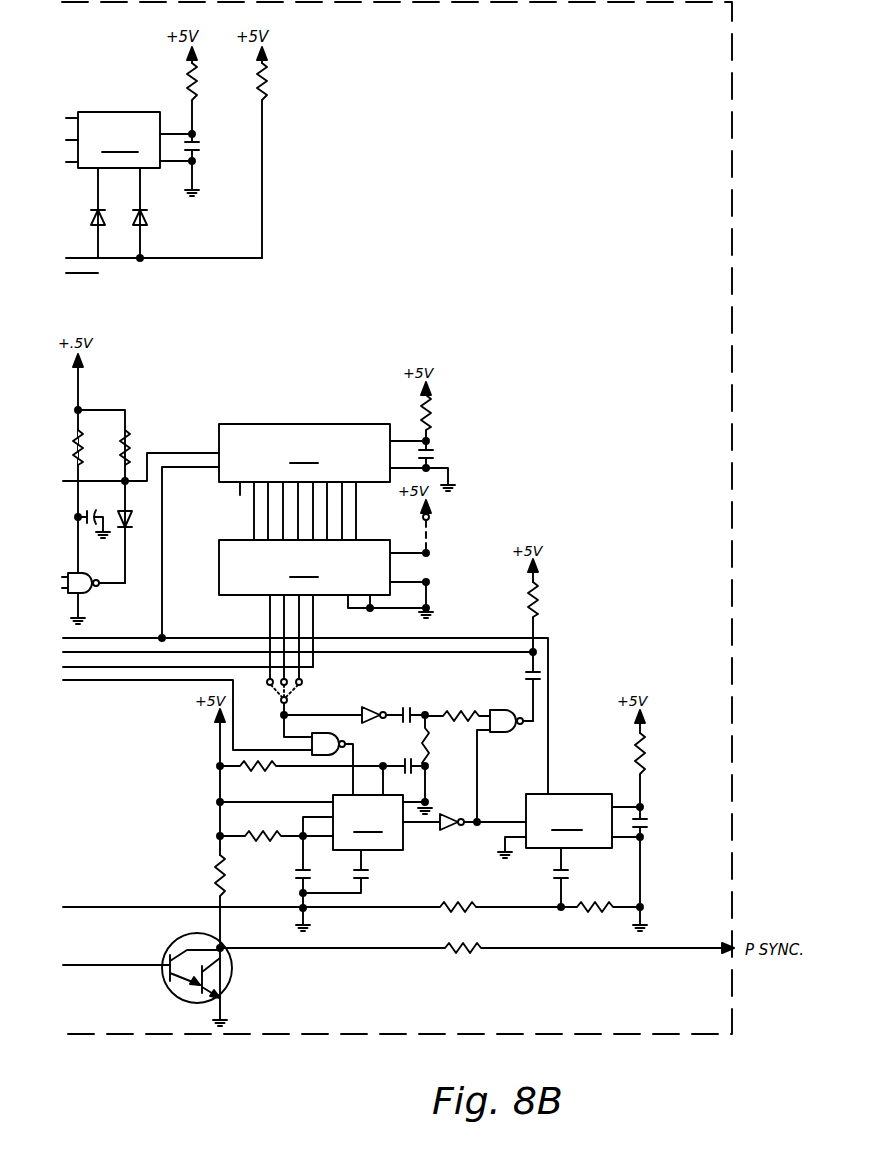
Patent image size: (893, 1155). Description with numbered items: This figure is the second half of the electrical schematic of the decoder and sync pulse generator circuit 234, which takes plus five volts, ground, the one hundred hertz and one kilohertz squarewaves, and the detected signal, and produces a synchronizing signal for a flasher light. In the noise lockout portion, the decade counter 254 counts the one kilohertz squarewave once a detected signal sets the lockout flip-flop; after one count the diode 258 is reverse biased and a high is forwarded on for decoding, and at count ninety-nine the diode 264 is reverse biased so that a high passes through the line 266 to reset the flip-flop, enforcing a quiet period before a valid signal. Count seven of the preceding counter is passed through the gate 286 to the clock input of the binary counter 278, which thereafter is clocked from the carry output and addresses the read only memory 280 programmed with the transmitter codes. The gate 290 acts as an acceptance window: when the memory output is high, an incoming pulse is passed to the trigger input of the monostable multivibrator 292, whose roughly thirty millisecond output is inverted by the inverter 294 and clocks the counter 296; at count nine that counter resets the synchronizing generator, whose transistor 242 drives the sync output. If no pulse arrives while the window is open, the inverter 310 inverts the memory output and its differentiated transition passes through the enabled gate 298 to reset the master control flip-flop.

The decoder and sync pulse generator circuit 234 is at (328, 320).
The transistor 242 is at (168, 996).
The decade counter 254 is at (129, 140).
The diode 258 is at (88, 213).
The diode 264 is at (150, 216).
The line 266 is at (262, 186).
The binary counter 278 is at (304, 453).
The read only memory 280 is at (304, 567).
The gate 286 is at (100, 596).
The gate 290 is at (326, 733).
The monostable multivibrator 292 is at (368, 822).
The inverter 294 is at (450, 834).
The counter 296 is at (569, 850).
The gate 298 is at (504, 735).
The inverter 310 is at (367, 706).